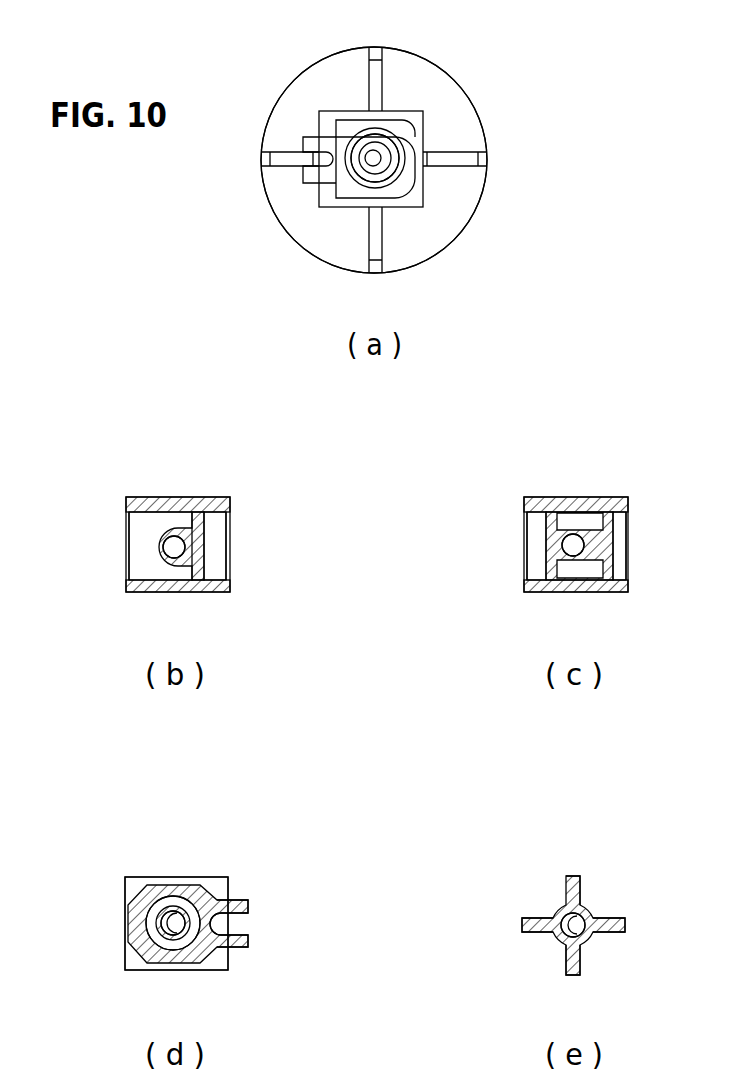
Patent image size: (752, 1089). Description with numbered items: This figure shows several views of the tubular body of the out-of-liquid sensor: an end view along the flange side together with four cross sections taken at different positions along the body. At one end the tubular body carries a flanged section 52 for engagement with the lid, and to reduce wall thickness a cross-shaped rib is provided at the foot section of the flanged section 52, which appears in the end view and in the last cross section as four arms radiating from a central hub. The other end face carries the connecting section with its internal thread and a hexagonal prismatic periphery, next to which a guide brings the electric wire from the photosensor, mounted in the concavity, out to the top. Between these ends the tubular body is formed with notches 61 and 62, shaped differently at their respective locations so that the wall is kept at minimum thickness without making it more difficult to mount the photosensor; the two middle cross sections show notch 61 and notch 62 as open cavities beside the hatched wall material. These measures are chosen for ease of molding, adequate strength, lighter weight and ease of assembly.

The flanged section 52 is at (450, 100).
The notch 61 is at (135, 560).
The notch 62 is at (535, 560).